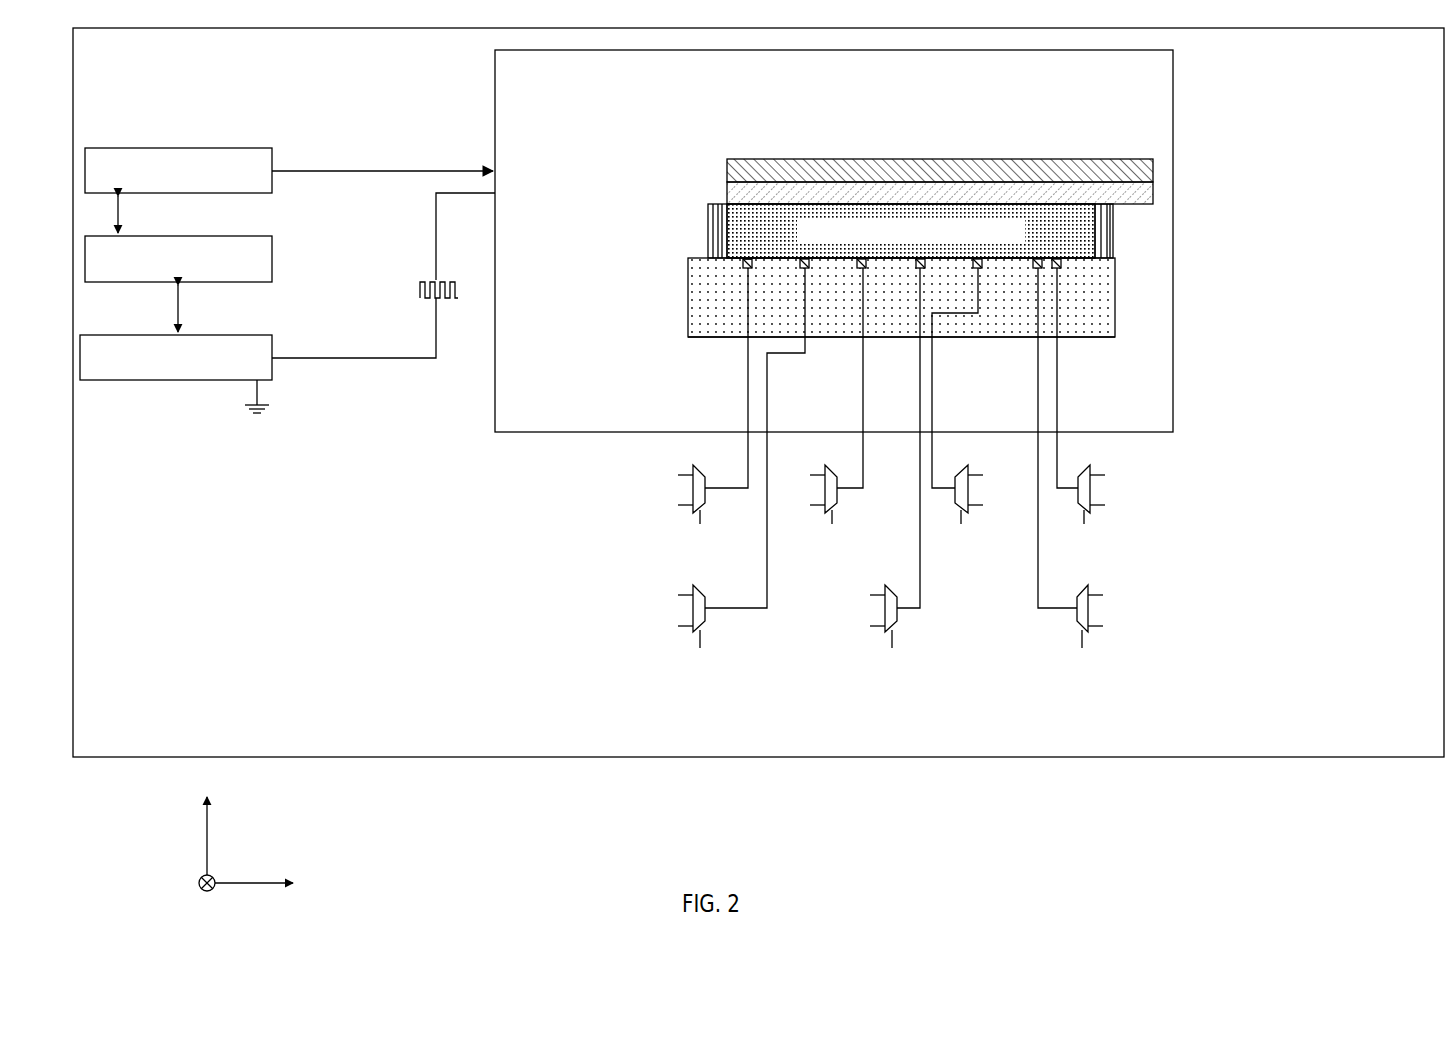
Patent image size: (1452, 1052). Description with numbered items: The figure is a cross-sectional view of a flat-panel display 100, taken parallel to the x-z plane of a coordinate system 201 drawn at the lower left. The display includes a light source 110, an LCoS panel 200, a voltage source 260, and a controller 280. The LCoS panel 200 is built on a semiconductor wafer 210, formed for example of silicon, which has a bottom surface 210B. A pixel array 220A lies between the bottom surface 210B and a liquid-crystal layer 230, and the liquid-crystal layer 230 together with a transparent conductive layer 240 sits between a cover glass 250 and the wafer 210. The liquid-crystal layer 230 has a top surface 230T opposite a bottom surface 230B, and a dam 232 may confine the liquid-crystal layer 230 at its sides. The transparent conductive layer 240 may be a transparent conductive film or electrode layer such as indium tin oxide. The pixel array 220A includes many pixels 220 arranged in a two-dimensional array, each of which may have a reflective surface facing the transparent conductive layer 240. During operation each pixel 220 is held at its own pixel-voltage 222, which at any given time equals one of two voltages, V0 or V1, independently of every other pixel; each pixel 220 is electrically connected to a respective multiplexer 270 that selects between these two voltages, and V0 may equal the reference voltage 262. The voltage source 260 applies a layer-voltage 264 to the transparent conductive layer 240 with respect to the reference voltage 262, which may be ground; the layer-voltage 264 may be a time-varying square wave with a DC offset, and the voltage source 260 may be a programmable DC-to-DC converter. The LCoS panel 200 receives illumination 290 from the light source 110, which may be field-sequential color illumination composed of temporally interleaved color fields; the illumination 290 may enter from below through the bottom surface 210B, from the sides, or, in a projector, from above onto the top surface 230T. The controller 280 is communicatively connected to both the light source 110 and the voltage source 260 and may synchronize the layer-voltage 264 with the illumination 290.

The flat-panel display 100 is at (1437, 749).
The light source 110 is at (258, 182).
The LCoS panel 200 is at (1165, 86).
The coordinate system 201 is at (190, 806).
The semiconductor wafer 210 is at (688, 325).
The bottom surface of semiconductor wafer 210B is at (696, 340).
The pixel 220 is at (744, 271).
The pixel array 220A is at (735, 265).
The pixel-voltage 222 is at (1058, 566).
The liquid-crystal layer 230 is at (1020, 241).
The top surface of liquid-crystal layer 230T is at (940, 201).
The bottom surface of liquid-crystal layer 230B is at (1077, 263).
The dam 232 is at (708, 230).
The transparent conductive layer 240 is at (1153, 192).
The cover glass 250 is at (727, 165).
The voltage source 260 is at (270, 369).
The reference voltage 262 is at (268, 398).
The layer-voltage 264 is at (418, 290).
The multiplexer 270 is at (1077, 612).
The controller 280 is at (245, 270).
The illumination 290 is at (306, 167).